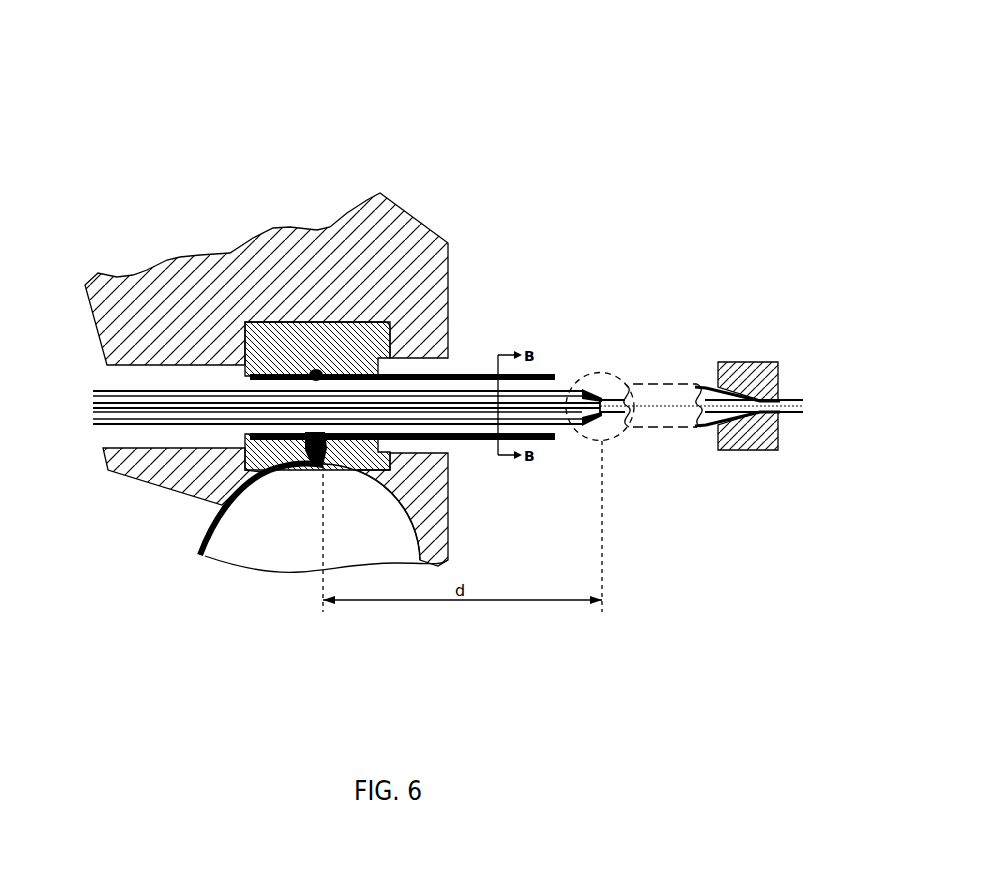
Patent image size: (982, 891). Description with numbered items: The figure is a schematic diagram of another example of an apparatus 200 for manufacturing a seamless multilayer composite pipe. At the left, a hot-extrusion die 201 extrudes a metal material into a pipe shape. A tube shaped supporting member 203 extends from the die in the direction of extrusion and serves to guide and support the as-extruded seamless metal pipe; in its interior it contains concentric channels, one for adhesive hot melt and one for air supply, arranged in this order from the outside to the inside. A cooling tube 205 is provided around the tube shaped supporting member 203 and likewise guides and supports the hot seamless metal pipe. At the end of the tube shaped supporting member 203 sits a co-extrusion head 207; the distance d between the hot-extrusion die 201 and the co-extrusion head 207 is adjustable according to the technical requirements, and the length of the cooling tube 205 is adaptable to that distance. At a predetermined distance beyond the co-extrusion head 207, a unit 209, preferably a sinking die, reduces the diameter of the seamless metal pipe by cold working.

The apparatus 200 is at (466, 117).
The hot-extrusion die 201 is at (333, 380).
The tube shaped supporting member 203 is at (178, 412).
The cooling tube 205 is at (467, 441).
The co-extrusion head 207 is at (592, 370).
The unit for reducing the diameter of the seamless metal pipe 209 is at (763, 362).